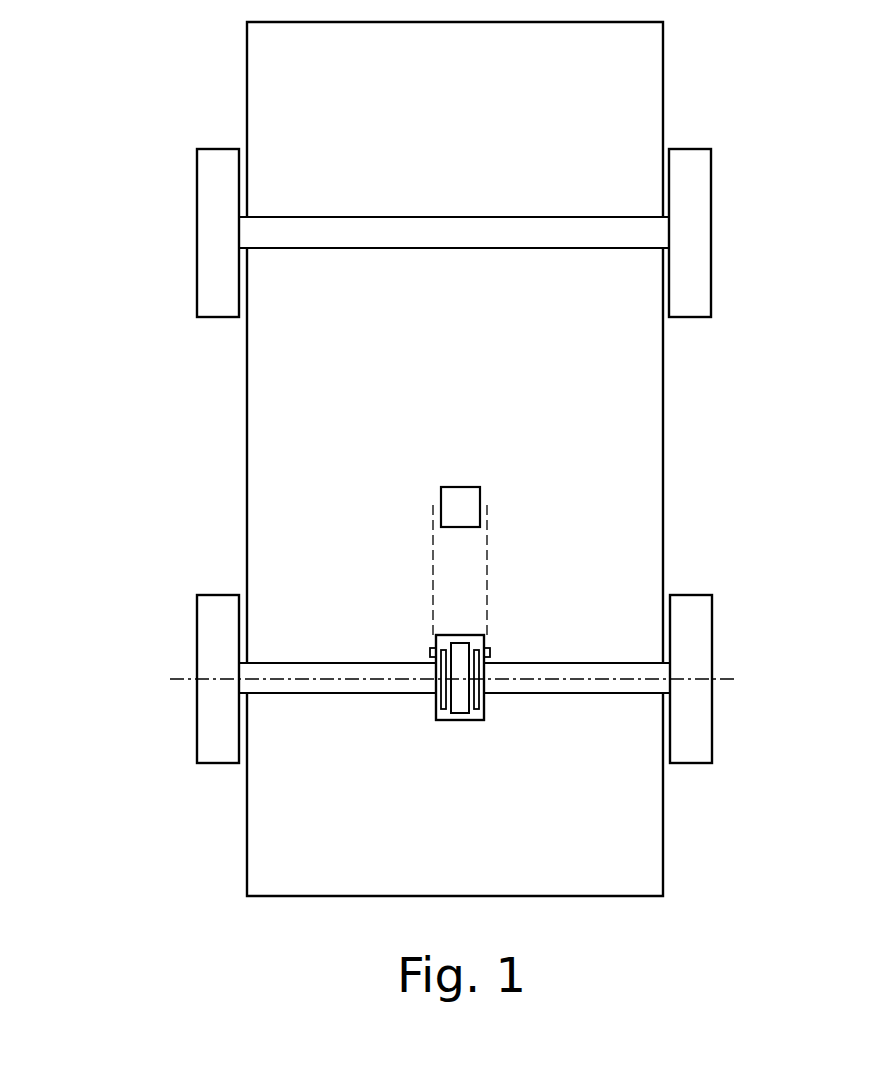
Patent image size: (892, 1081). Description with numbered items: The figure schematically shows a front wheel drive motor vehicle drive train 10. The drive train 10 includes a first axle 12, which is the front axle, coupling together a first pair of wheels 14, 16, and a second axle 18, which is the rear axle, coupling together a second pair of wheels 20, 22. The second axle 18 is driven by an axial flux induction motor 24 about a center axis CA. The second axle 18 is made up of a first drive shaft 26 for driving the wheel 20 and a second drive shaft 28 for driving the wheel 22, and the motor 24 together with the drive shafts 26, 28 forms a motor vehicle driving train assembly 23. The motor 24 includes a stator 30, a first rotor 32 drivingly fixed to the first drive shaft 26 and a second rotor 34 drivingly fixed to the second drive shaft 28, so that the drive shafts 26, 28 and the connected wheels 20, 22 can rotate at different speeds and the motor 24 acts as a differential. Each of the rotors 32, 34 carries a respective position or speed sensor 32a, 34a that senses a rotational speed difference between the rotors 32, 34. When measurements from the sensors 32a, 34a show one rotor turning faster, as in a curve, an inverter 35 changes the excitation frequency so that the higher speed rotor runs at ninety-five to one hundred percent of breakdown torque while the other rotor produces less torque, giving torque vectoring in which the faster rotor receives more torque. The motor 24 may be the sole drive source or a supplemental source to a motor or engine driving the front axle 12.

The motor vehicle drive train 10 is at (690, 106).
The first axle 12 is at (165, 229).
The wheel 14 is at (215, 270).
The wheel 16 is at (693, 280).
The second axle 18 is at (140, 670).
The wheel 20 is at (213, 724).
The wheel 22 is at (687, 735).
The motor vehicle driving train assembly 23 is at (606, 808).
The axial flux induction motor 24 is at (461, 618).
The first drive shaft 26 is at (318, 685).
The second drive shaft 28 is at (577, 685).
The stator 30 is at (460, 702).
The first rotor 32 is at (435, 700).
The second rotor 34 is at (482, 700).
The position or speed sensor 32a is at (430, 655).
The position or speed sensor 34a is at (495, 655).
The inverter 35 is at (458, 487).
The center axis CA is at (590, 677).